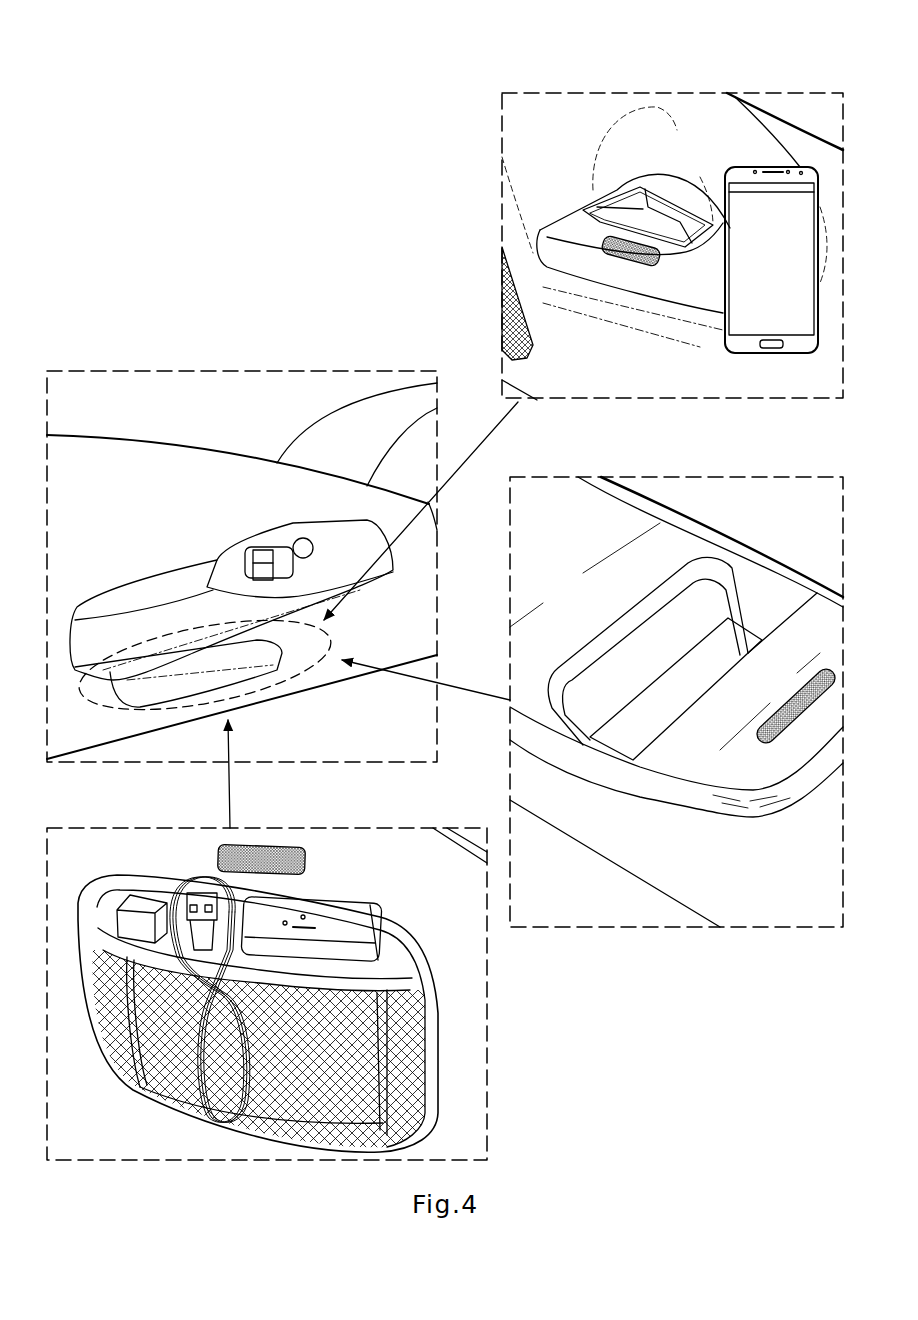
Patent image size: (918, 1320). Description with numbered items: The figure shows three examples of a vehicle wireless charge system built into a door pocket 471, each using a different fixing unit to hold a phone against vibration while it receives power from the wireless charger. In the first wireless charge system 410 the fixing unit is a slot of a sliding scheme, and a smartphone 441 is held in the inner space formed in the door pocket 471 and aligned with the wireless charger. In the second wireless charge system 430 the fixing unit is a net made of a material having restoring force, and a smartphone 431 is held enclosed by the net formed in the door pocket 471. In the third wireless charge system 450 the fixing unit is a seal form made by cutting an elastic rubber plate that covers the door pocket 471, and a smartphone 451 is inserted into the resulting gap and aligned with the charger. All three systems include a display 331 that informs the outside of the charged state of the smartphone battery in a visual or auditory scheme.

The third wireless charge system 450 is at (612, 194).
The smartphone 451 is at (750, 353).
The display 331 is at (790, 708).
The door pocket 471 is at (148, 643).
The smartphone 441 is at (610, 747).
The first wireless charge system 410 is at (705, 812).
The second wireless charge system 430 is at (410, 1077).
The smartphone 431 is at (360, 907).